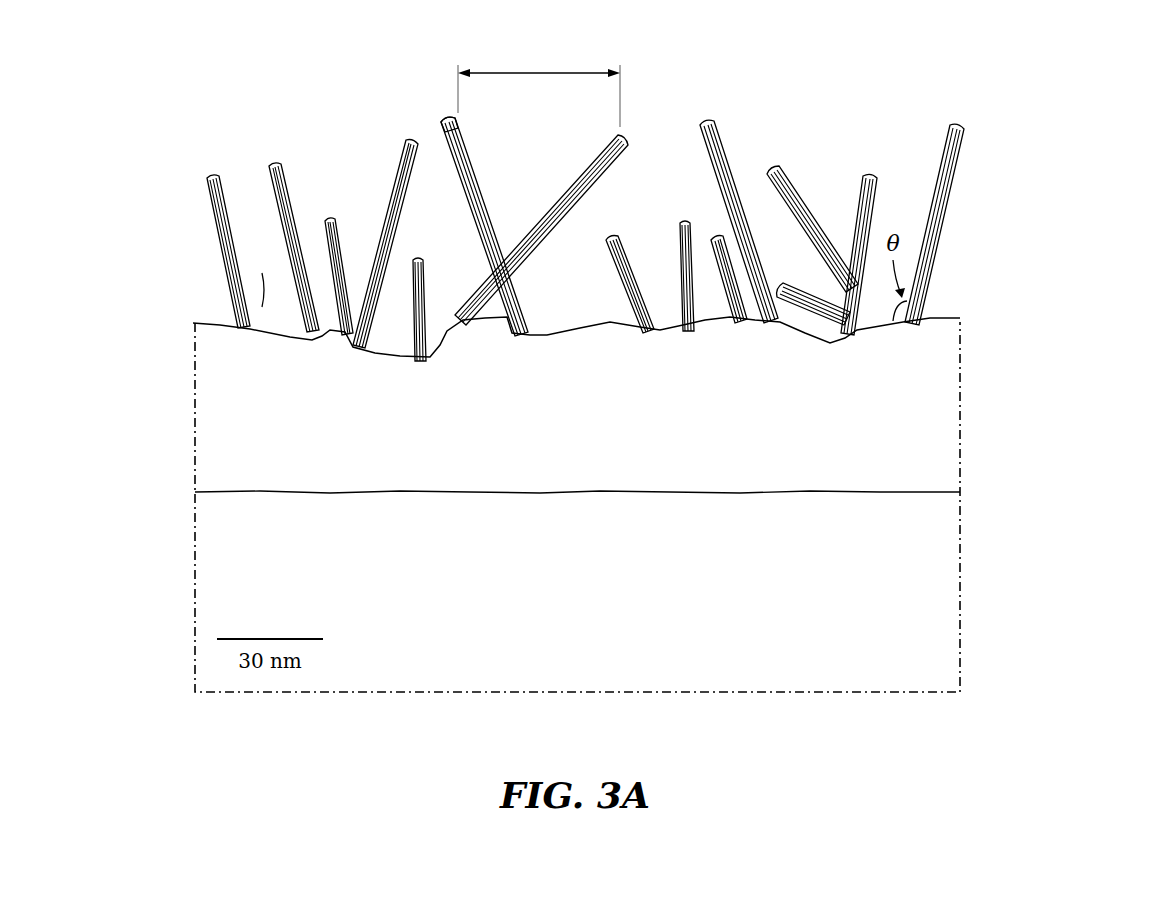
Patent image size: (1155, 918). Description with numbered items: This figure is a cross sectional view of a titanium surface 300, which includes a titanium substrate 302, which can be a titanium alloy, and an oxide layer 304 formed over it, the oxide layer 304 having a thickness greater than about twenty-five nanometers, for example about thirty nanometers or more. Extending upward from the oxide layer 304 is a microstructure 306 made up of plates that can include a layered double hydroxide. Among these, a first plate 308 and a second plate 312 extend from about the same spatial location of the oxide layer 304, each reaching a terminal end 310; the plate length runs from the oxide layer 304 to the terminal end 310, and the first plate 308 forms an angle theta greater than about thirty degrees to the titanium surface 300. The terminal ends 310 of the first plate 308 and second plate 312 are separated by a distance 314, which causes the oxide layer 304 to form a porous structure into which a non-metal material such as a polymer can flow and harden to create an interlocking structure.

The titanium surface 300 is at (158, 517).
The titanium substrate 302 is at (952, 593).
The oxide layer 304 is at (952, 443).
The microstructure 306 is at (663, 222).
The first plate 308 is at (483, 197).
The terminal end 310 is at (443, 118).
The second plate 312 is at (563, 218).
The distance 314 is at (538, 73).